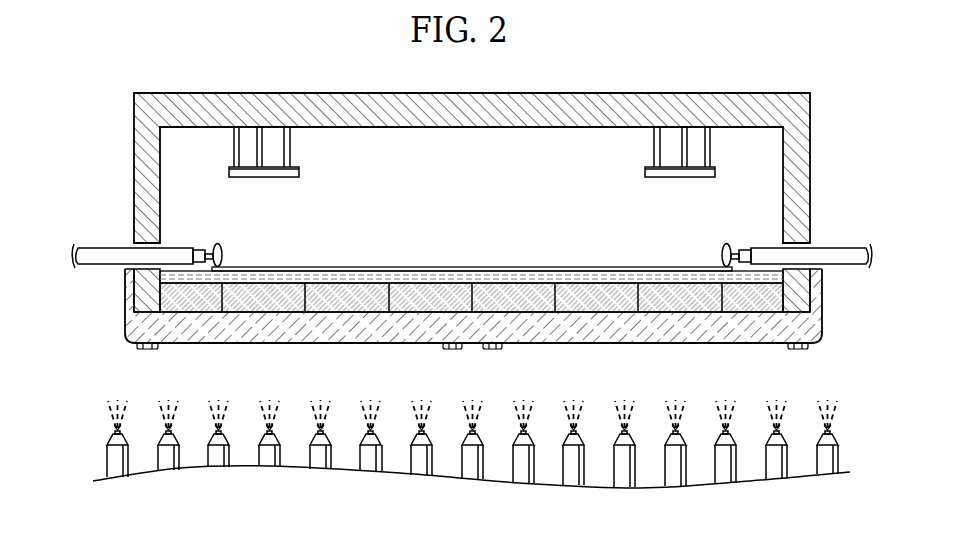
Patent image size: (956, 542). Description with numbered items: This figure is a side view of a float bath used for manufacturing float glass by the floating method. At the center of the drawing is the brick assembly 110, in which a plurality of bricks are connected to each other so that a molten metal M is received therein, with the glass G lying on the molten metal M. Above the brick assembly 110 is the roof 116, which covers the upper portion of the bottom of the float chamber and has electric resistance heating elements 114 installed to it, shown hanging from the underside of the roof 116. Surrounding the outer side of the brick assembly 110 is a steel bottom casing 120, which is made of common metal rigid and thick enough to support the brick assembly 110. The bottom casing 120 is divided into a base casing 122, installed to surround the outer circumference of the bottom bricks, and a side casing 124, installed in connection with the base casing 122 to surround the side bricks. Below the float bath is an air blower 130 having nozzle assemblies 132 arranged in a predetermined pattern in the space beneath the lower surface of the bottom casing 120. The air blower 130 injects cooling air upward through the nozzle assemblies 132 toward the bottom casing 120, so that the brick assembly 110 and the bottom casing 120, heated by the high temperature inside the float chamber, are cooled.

The roof 116 is at (818, 124).
The electric resistance heating elements 114 is at (656, 150).
The brick assembly 110 is at (585, 303).
The bottom casing 120 is at (440, 335).
The base casing 122 is at (623, 341).
The side casing 124 is at (125, 306).
The air blower 130 is at (100, 467).
The nozzle assemblies 132 is at (110, 440).
The molten metal M is at (498, 281).
The glass substrate G is at (592, 268).